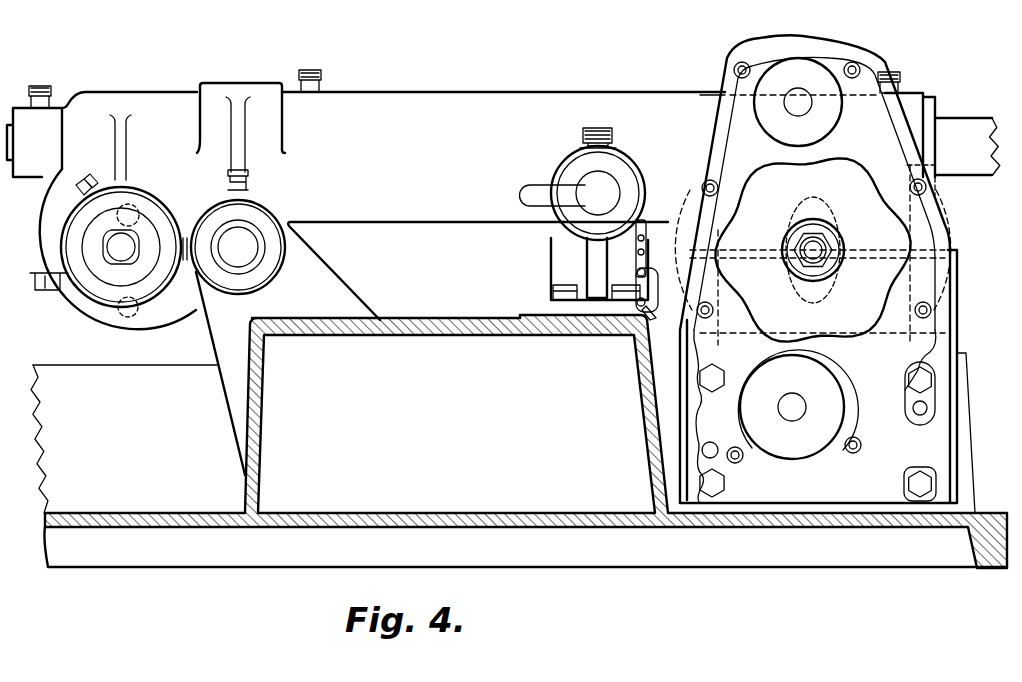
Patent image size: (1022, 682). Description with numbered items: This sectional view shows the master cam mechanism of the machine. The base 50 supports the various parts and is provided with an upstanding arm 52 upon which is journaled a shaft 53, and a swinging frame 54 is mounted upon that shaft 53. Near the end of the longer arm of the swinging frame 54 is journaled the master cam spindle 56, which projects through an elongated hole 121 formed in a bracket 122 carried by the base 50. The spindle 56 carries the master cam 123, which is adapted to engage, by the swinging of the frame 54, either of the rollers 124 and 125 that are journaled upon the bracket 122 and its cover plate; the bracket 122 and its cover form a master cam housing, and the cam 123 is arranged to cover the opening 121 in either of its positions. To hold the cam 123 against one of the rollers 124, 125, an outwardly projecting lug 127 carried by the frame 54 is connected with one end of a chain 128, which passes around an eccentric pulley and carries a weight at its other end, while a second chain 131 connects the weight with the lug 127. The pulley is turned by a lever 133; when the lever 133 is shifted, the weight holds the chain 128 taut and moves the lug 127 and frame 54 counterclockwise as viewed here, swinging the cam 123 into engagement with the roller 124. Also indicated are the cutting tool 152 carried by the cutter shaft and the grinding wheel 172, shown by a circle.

The base 50 is at (415, 320).
The upstanding arm 52 is at (330, 255).
The shaft 53 is at (248, 258).
The swinging frame 54 is at (510, 100).
The master cam spindle 56 is at (816, 242).
The elongated hole 121 is at (838, 215).
The bracket 122 is at (822, 42).
The master cam 123 is at (783, 178).
The roller 124 is at (826, 128).
The roller 125 is at (812, 375).
The lug 127 is at (650, 272).
The chain 128 is at (642, 220).
The second chain 131 is at (648, 314).
The lever 133 is at (530, 193).
The cutting tool 152 is at (130, 318).
The grinding wheel 172 is at (130, 205).